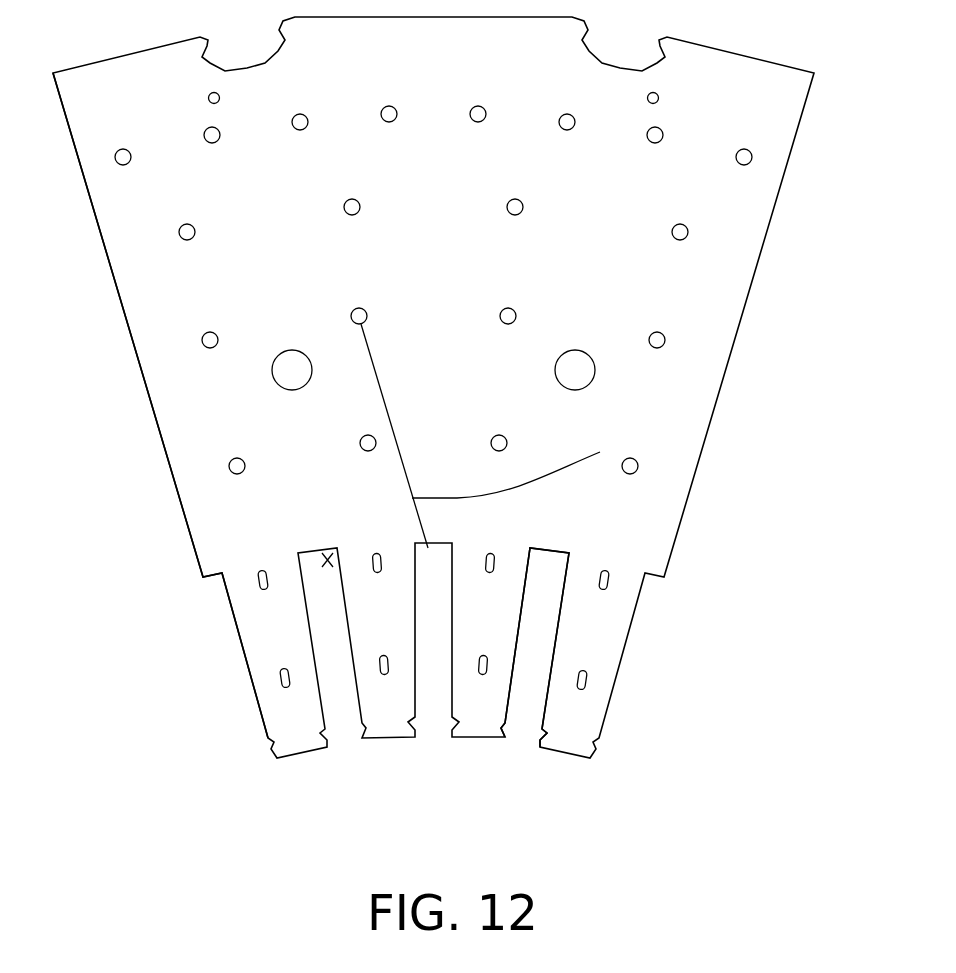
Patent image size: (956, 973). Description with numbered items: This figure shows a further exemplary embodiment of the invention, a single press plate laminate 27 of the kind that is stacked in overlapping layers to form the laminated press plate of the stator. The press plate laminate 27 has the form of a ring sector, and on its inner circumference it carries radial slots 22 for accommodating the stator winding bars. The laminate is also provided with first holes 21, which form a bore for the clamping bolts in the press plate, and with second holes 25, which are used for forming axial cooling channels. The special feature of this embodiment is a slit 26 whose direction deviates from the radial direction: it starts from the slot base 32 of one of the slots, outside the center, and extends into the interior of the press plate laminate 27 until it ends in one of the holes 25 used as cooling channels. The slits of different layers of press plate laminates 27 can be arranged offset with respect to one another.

The first hole 21 is at (582, 383).
The radial slot 22 is at (543, 646).
The second hole 25 is at (351, 315).
The slit 26 is at (600, 452).
The press plate laminate 27 is at (192, 433).
The slot base 32 is at (327, 558).